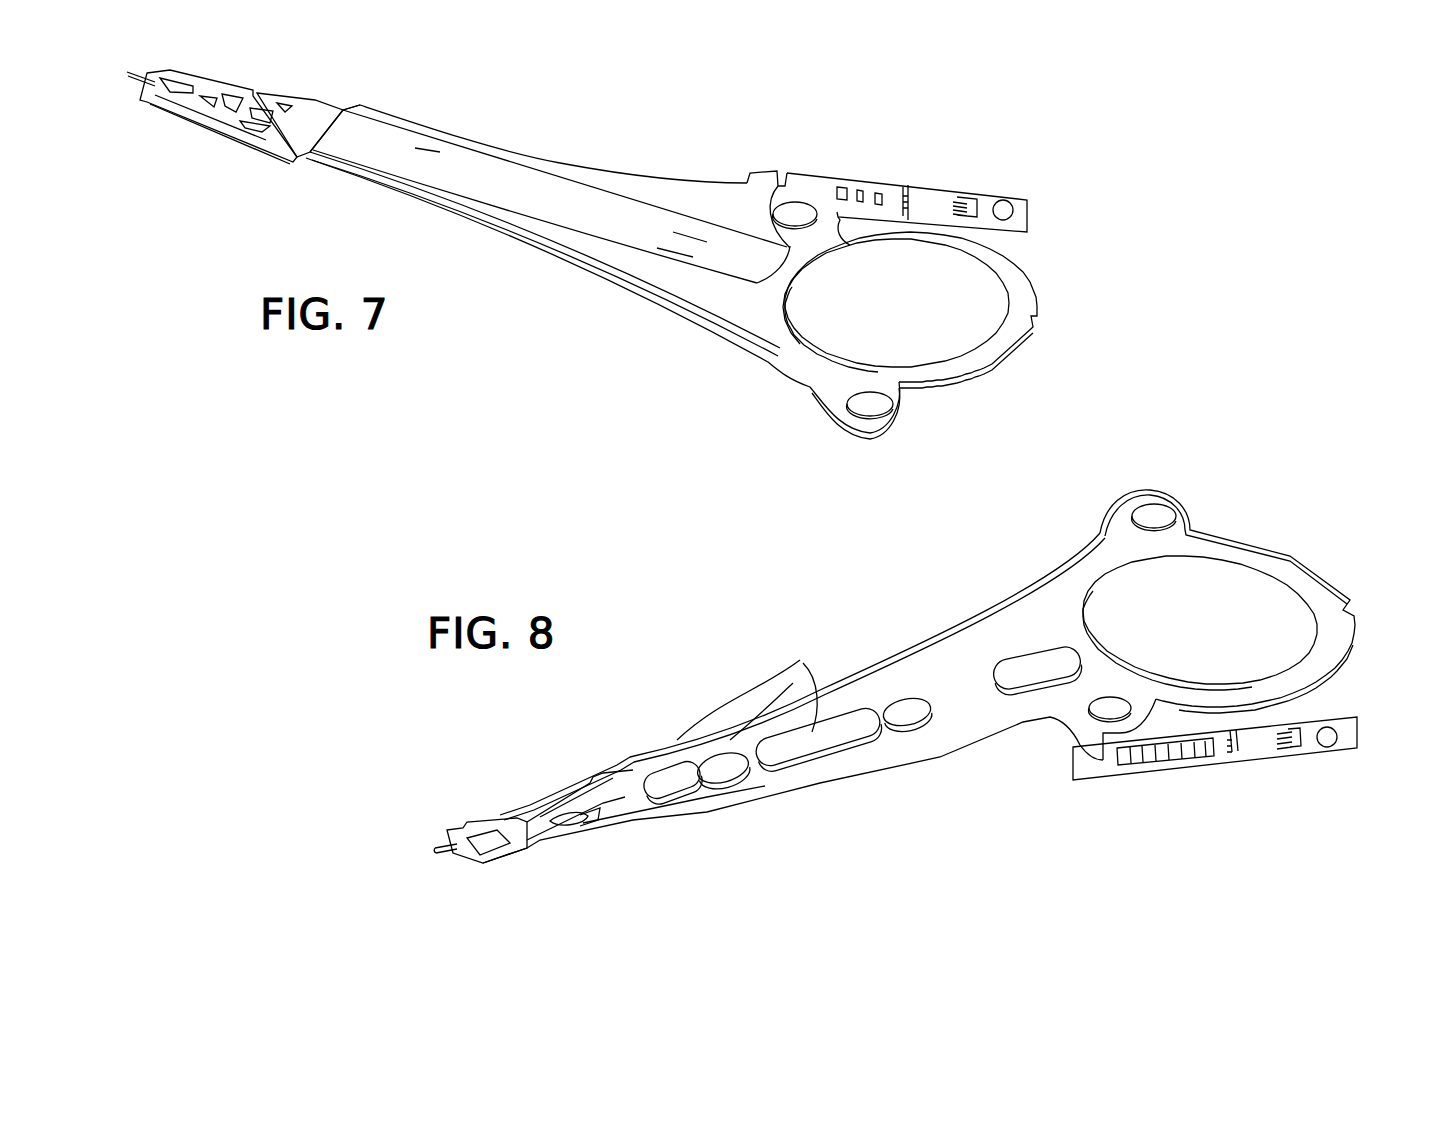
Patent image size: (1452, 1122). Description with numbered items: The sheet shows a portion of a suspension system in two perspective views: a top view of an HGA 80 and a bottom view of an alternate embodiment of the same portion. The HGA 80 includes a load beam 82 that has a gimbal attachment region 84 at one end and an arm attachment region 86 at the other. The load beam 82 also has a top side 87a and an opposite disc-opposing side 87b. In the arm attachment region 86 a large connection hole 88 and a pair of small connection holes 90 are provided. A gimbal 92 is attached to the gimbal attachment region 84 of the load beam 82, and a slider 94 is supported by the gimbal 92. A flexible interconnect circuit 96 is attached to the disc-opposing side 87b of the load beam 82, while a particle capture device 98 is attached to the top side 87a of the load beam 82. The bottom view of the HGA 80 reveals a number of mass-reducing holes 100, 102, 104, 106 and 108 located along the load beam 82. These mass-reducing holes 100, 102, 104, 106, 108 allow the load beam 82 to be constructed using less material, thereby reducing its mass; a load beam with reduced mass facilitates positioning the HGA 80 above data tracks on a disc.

In FIG. 7, the HGA 80 is at (645, 142).
In FIG. 8, the HGA 80 is at (1043, 525).
In FIG. 7, the load beam 82 is at (696, 322).
In FIG. 8, the load beam 82 is at (1020, 578).
In FIG. 7, the gimbal attachment region 84 is at (320, 170).
In FIG. 8, the gimbal attachment region 84 is at (641, 743).
In FIG. 7, the arm attachment region 86 is at (1042, 288).
In FIG. 8, the arm attachment region 86 is at (1354, 665).
In FIG. 7, the top side 87a is at (560, 231).
In FIG. 8, the disc-opposing side 87b is at (975, 638).
In FIG. 7, the large connection hole 88 is at (792, 298).
In FIG. 8, the large connection hole 88 is at (1252, 563).
In FIG. 7, the small connection holes 90 is at (862, 392).
In FIG. 8, the small connection holes 90 is at (1112, 700).
In FIG. 7, the gimbal 92 is at (318, 112).
In FIG. 8, the gimbal 92 is at (528, 800).
In FIG. 7, the slider 94 is at (157, 104).
In FIG. 8, the slider 94 is at (460, 852).
In FIG. 7, the flexible interconnect circuit 96 is at (922, 183).
In FIG. 8, the flexible interconnect circuit 96 is at (1278, 768).
In FIG. 7, the particle capture device 98 is at (518, 168).
In FIG. 8, the particle capture device 98 is at (1030, 667).
In FIG. 8, the mass-reducing hole 100 is at (697, 802).
In FIG. 8, the mass-reducing hole 102 is at (742, 788).
In FIG. 8, the mass-reducing hole 104 is at (880, 745).
In FIG. 8, the mass-reducing hole 106 is at (927, 728).
In FIG. 8, the mass-reducing hole 108 is at (1022, 702).